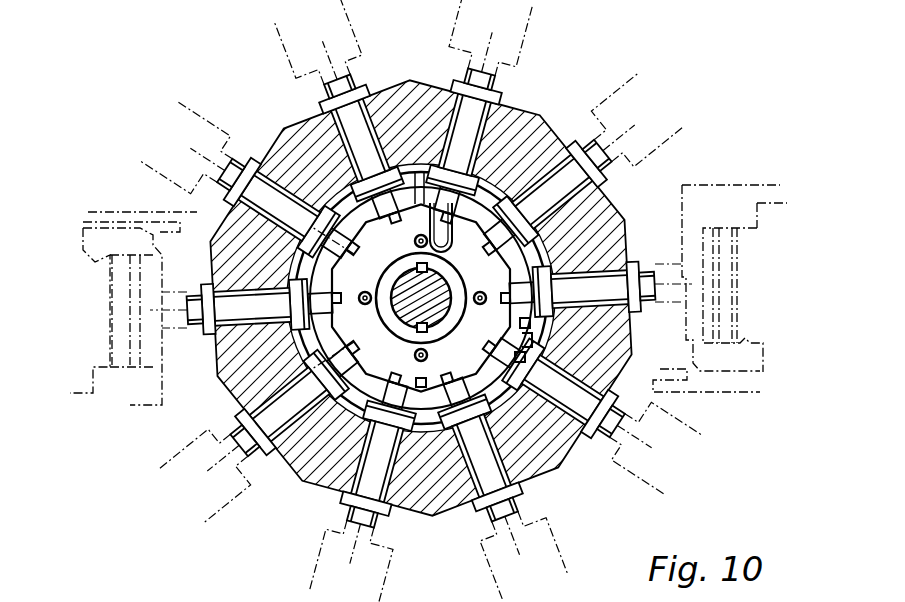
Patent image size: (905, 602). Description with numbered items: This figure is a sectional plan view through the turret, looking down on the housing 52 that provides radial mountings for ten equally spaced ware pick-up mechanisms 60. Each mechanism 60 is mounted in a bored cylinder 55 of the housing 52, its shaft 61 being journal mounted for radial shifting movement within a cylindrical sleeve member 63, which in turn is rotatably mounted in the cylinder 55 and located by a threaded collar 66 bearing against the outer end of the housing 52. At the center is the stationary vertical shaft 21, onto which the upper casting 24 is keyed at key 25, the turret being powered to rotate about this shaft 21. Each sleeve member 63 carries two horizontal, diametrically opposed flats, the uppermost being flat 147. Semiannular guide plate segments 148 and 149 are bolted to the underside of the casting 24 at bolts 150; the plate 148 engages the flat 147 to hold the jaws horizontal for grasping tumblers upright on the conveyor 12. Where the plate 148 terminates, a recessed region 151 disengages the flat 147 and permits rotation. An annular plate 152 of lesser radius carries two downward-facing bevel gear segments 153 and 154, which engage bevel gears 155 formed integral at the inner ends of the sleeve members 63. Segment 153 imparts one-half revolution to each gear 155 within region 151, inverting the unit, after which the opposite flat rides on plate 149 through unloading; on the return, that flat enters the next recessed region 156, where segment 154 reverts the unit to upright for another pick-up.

The conveyor 12 is at (340, 271).
The vertical shaft 21 is at (440, 288).
The upper casting 24 is at (414, 241).
The key 25 is at (430, 268).
The housing 52 is at (543, 127).
The bored cylinder 55 is at (614, 250).
The ware pick-up mechanism 60 is at (745, 281).
The shaft 61 is at (657, 305).
The cylindrical sleeve member 63 is at (619, 296).
The threaded collar 66 is at (634, 262).
The flat 147 is at (421, 295).
The guide plate segment 148 is at (515, 358).
The guide plate segment 149 is at (415, 201).
The bolt 150 is at (414, 357).
The recessed region 151 is at (521, 339).
The annular plate 152 is at (432, 384).
The bevel gear segment 153 is at (519, 323).
The bevel gear segment 154 is at (362, 288).
The bevel gear 155 is at (511, 289).
The recessed region 156 is at (356, 312).